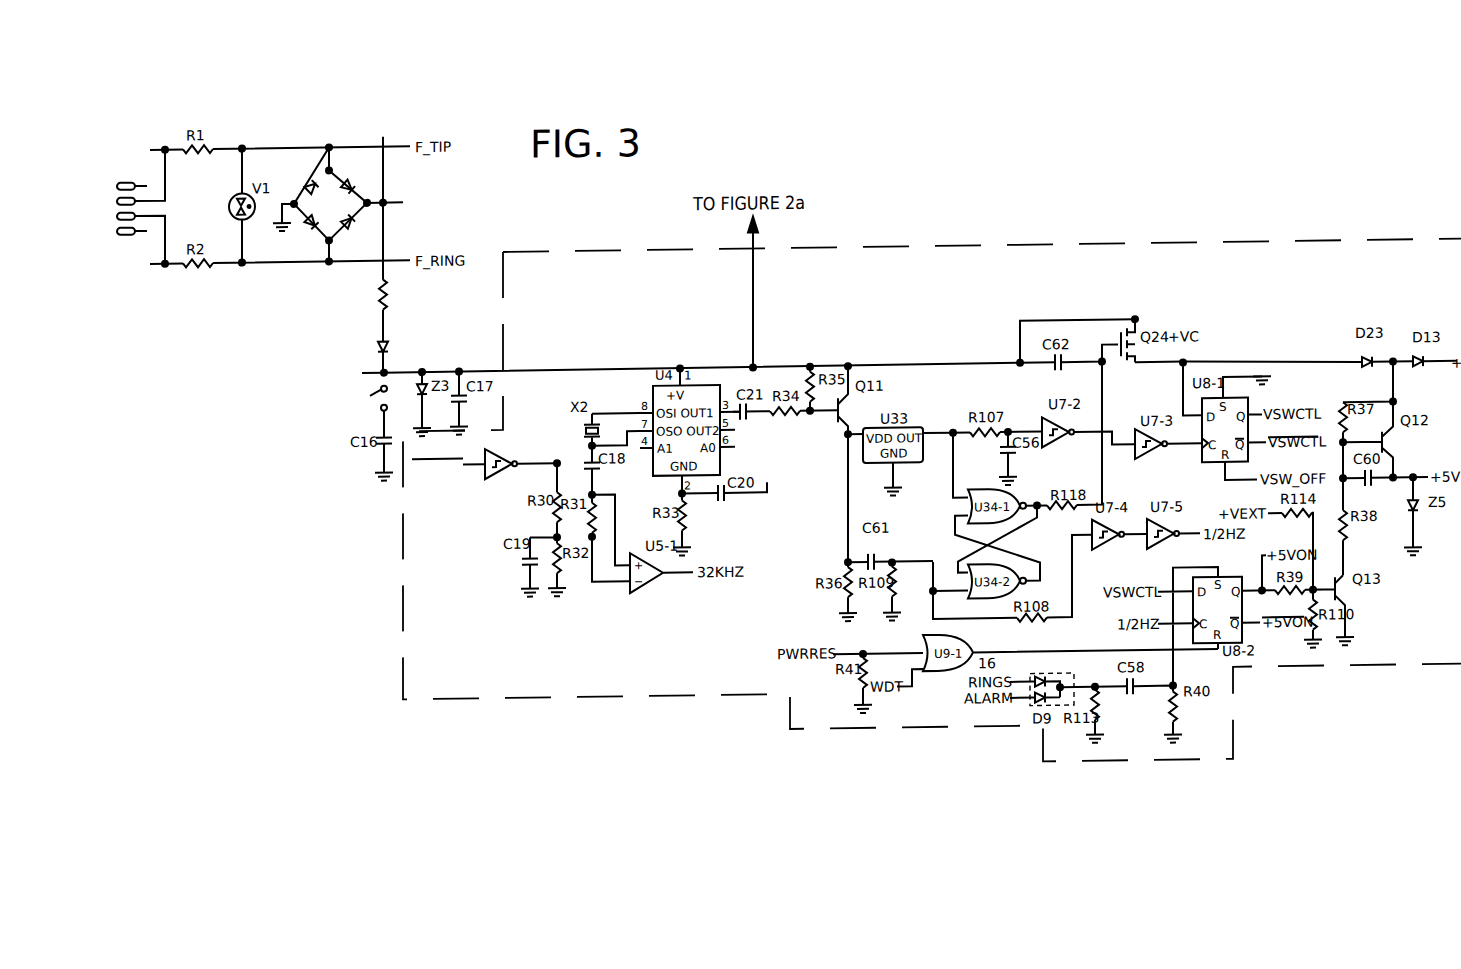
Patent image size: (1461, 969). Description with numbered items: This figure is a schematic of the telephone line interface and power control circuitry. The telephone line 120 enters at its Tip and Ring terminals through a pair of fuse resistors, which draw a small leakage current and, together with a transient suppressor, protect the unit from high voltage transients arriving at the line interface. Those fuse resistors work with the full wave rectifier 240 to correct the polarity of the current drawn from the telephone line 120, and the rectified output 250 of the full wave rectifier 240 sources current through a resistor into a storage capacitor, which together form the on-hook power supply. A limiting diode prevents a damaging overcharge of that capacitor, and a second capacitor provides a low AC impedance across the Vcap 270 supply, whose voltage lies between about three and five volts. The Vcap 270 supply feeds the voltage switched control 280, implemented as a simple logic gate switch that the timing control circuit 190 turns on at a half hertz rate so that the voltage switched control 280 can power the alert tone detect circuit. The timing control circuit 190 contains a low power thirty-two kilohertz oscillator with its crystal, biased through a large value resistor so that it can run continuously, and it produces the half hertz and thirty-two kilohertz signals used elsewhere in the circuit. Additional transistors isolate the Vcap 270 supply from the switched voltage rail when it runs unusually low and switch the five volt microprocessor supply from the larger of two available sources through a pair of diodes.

The telephone line 120 is at (153, 150).
The full wave rectifier 240 is at (329, 181).
The rectified output 250 is at (372, 205).
The Vcap power supply 270 is at (372, 364).
The voltage switched control (Vcsw) 280 is at (557, 408).
The timing control circuit 190 is at (910, 259).